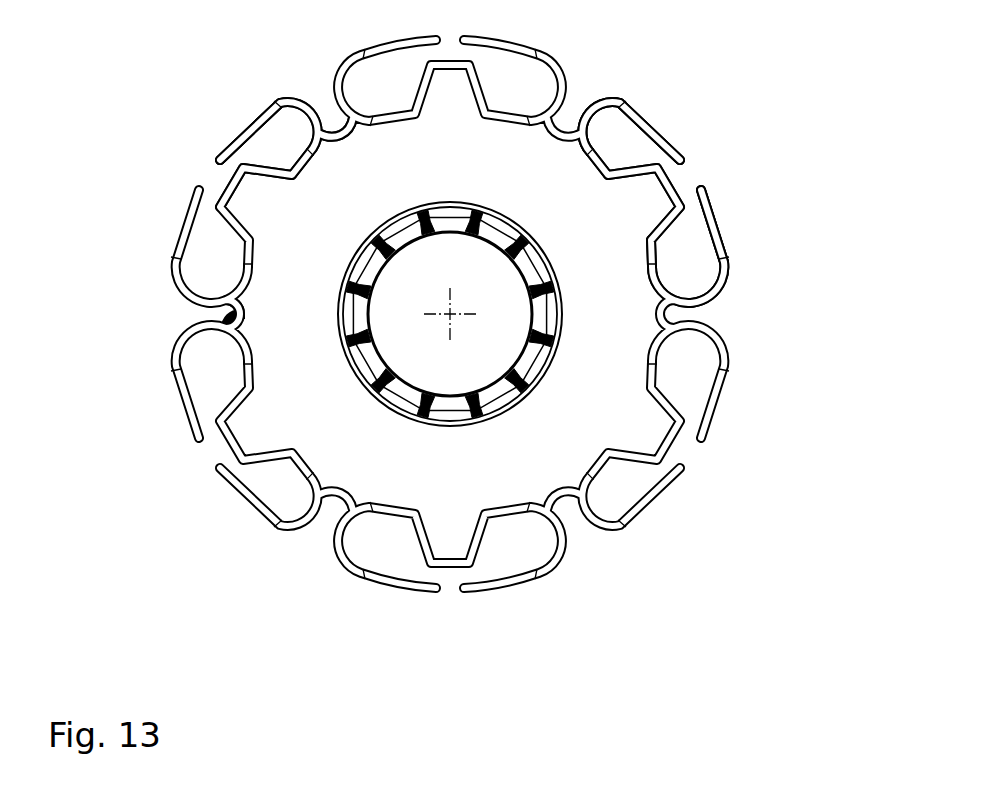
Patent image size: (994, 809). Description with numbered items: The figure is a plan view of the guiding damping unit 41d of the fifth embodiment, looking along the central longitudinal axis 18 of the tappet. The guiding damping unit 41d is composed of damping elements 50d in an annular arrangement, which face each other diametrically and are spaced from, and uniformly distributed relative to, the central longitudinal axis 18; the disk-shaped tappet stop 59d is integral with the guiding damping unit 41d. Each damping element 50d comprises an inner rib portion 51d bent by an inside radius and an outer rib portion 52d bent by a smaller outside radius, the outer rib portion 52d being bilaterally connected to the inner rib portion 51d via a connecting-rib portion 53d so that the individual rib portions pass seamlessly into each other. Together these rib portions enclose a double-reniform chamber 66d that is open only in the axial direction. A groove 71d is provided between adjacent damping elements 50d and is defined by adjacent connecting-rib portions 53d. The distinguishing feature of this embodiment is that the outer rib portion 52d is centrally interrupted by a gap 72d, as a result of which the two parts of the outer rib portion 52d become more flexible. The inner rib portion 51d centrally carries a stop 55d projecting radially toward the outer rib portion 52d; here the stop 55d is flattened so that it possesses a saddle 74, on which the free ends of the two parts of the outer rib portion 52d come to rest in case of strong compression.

The central longitudinal axis 18 is at (450, 313).
The guiding damping unit 41d is at (370, 587).
The damping element 50d is at (238, 121).
The inner rib portion 51d is at (653, 249).
The outer rib portion 52d is at (673, 136).
The connecting-rib portion 53d is at (596, 92).
The stop 55d is at (213, 157).
The tappet stop 59d is at (257, 315).
The double-reniform chamber 66d is at (627, 138).
The groove 71d is at (330, 113).
The gap 72d is at (654, 206).
The saddle 74 is at (252, 192).